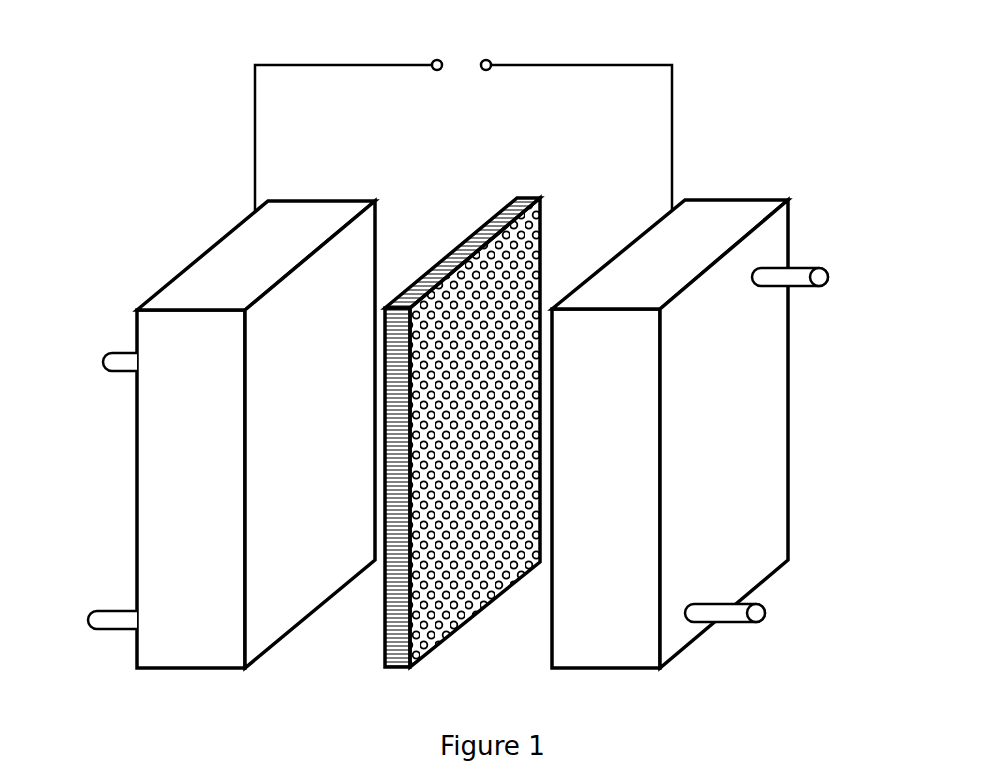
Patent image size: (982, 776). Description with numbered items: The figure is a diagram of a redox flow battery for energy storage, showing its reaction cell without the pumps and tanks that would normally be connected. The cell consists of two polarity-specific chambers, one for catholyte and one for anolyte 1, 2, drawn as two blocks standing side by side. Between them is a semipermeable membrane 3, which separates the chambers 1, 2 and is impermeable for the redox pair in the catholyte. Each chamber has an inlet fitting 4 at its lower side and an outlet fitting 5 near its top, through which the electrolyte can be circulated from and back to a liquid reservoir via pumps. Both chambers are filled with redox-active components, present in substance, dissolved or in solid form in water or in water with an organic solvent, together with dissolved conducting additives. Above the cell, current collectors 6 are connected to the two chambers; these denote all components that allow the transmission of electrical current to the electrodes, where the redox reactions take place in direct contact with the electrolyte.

The polarity-specific chamber for catholyte 1 is at (256, 434).
The polarity-specific chamber for anolyte 2 is at (670, 434).
The semipermeable membrane 3 is at (462, 412).
The inlet fitting 4 is at (23, 620).
The outlet fitting 5 is at (40, 362).
The current collector 6 is at (463, 137).